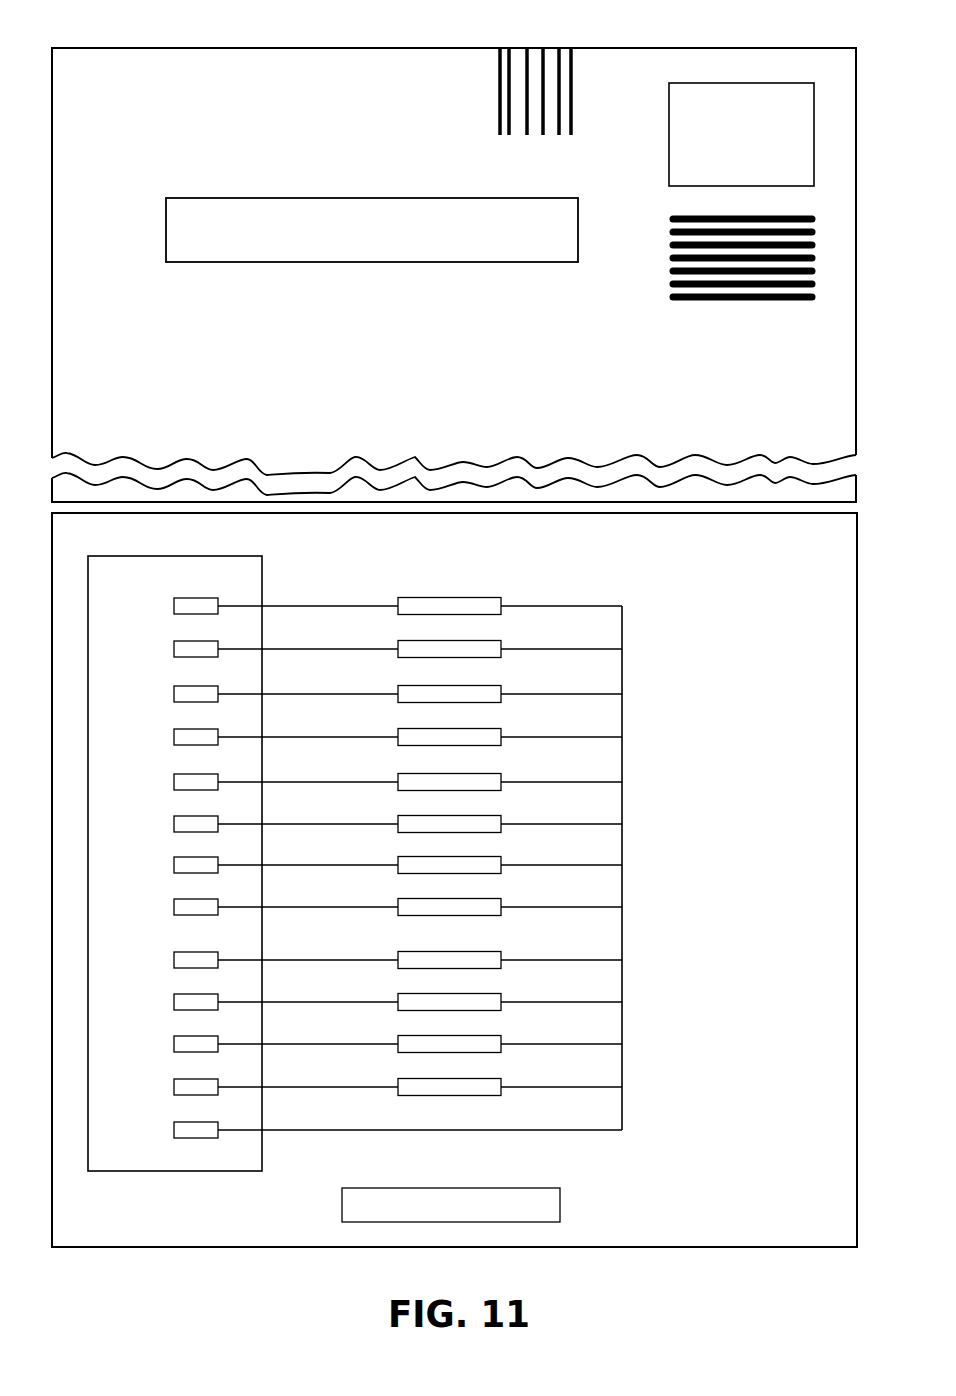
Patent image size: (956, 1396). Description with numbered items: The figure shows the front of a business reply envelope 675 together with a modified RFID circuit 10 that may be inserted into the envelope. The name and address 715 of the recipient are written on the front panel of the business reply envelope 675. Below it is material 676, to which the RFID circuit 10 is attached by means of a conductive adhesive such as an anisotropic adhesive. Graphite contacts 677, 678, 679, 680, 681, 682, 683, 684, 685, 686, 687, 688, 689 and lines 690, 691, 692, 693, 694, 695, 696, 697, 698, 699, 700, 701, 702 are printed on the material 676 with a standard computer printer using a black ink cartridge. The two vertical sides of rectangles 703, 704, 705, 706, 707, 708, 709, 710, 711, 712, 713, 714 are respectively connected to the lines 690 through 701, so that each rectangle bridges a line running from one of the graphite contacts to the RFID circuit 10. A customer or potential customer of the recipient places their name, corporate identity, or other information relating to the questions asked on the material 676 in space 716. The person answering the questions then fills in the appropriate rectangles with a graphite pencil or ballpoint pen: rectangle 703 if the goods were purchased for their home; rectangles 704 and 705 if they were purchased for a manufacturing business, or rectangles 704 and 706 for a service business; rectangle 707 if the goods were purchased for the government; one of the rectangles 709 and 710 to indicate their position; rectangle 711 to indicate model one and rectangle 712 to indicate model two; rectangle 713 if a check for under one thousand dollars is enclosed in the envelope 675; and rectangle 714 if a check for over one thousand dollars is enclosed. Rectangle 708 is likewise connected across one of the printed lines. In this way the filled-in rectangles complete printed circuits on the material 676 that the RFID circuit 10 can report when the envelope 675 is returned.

The RFID circuit 10 is at (173, 556).
The business reply envelope 675 is at (219, 48).
The material 676 is at (648, 1222).
The graphite contact 677 is at (177, 598).
The graphite contact 678 is at (177, 641).
The graphite contact 679 is at (177, 686).
The graphite contact 680 is at (177, 729).
The graphite contact 681 is at (177, 774).
The graphite contact 682 is at (177, 816).
The graphite contact 683 is at (177, 857).
The graphite contact 684 is at (177, 899).
The graphite contact 685 is at (177, 952).
The graphite contact 686 is at (177, 994).
The graphite contact 687 is at (177, 1036).
The graphite contact 688 is at (177, 1079).
The graphite contact 689 is at (177, 1122).
The line 690 is at (352, 605).
The line 691 is at (352, 648).
The line 692 is at (352, 693).
The line 693 is at (352, 736).
The line 694 is at (352, 781).
The line 695 is at (352, 823).
The line 696 is at (352, 864).
The line 697 is at (352, 906).
The line 698 is at (352, 959).
The line 699 is at (352, 1001).
The line 700 is at (352, 1043).
The line 701 is at (352, 1086).
The line 702 is at (368, 1130).
The rectangle 703 is at (485, 595).
The rectangle 704 is at (485, 638).
The rectangle 705 is at (485, 683).
The rectangle 706 is at (485, 726).
The rectangle 707 is at (485, 771).
The rectangle 708 is at (485, 813).
The rectangle 709 is at (485, 854).
The rectangle 710 is at (485, 896).
The rectangle 711 is at (485, 949).
The rectangle 712 is at (485, 991).
The rectangle 713 is at (485, 1033).
The rectangle 714 is at (485, 1076).
The name and address 715 is at (278, 327).
The space 716 is at (342, 1222).